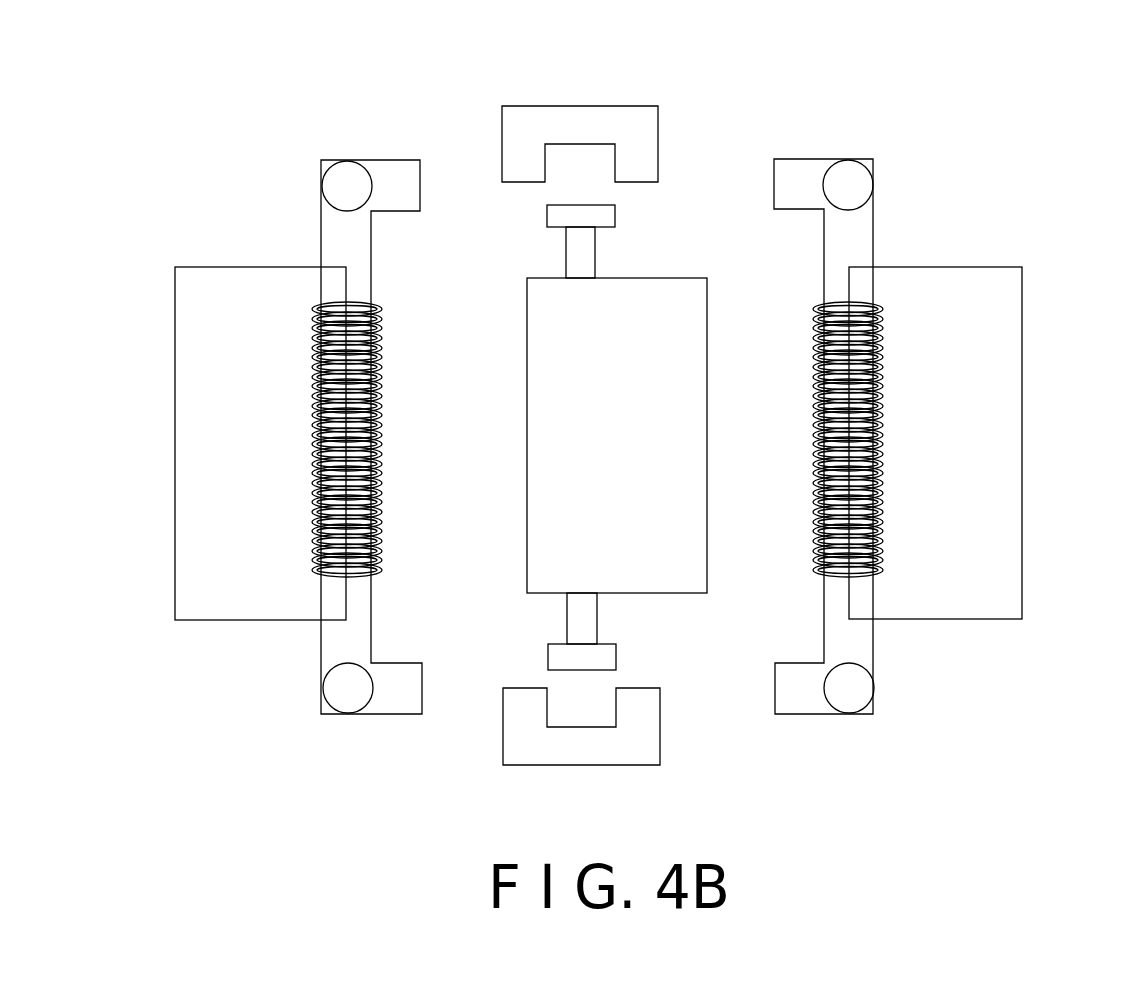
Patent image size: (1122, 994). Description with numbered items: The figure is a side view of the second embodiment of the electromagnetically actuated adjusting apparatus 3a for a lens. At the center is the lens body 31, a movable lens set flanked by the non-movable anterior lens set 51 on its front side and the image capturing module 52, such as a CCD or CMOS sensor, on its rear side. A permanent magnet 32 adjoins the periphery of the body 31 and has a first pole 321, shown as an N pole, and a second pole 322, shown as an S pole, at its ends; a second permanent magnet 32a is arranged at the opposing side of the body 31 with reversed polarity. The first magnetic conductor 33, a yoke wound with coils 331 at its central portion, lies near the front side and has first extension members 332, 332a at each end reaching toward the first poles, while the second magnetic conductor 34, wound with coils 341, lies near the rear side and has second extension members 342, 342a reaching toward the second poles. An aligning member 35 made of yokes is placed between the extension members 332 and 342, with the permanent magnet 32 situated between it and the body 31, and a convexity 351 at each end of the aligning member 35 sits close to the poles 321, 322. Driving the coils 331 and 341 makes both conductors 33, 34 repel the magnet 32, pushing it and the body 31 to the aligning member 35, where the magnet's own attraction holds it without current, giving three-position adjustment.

The electromagnetically actuated adjusting apparatus for lens 3a is at (296, 135).
The lens body 31 is at (541, 438).
The permanent magnet 32 is at (566, 218).
The first pole 321 is at (548, 222).
The second pole 322 is at (618, 218).
The permanent magnet 32a is at (548, 655).
The first magnetic conductor 33 is at (323, 241).
The coils 331 is at (313, 487).
The first extension member 332 is at (400, 165).
The first extension member 332a is at (398, 717).
The second magnetic conductor 34 is at (865, 247).
The coils 341 is at (878, 385).
The second extension member 342 is at (797, 165).
The second extension member 342a is at (800, 717).
The aligning member 35 is at (580, 125).
The convexity 351 is at (520, 170).
The anterior lens set 51 is at (187, 428).
The image capturing module 52 is at (995, 390).